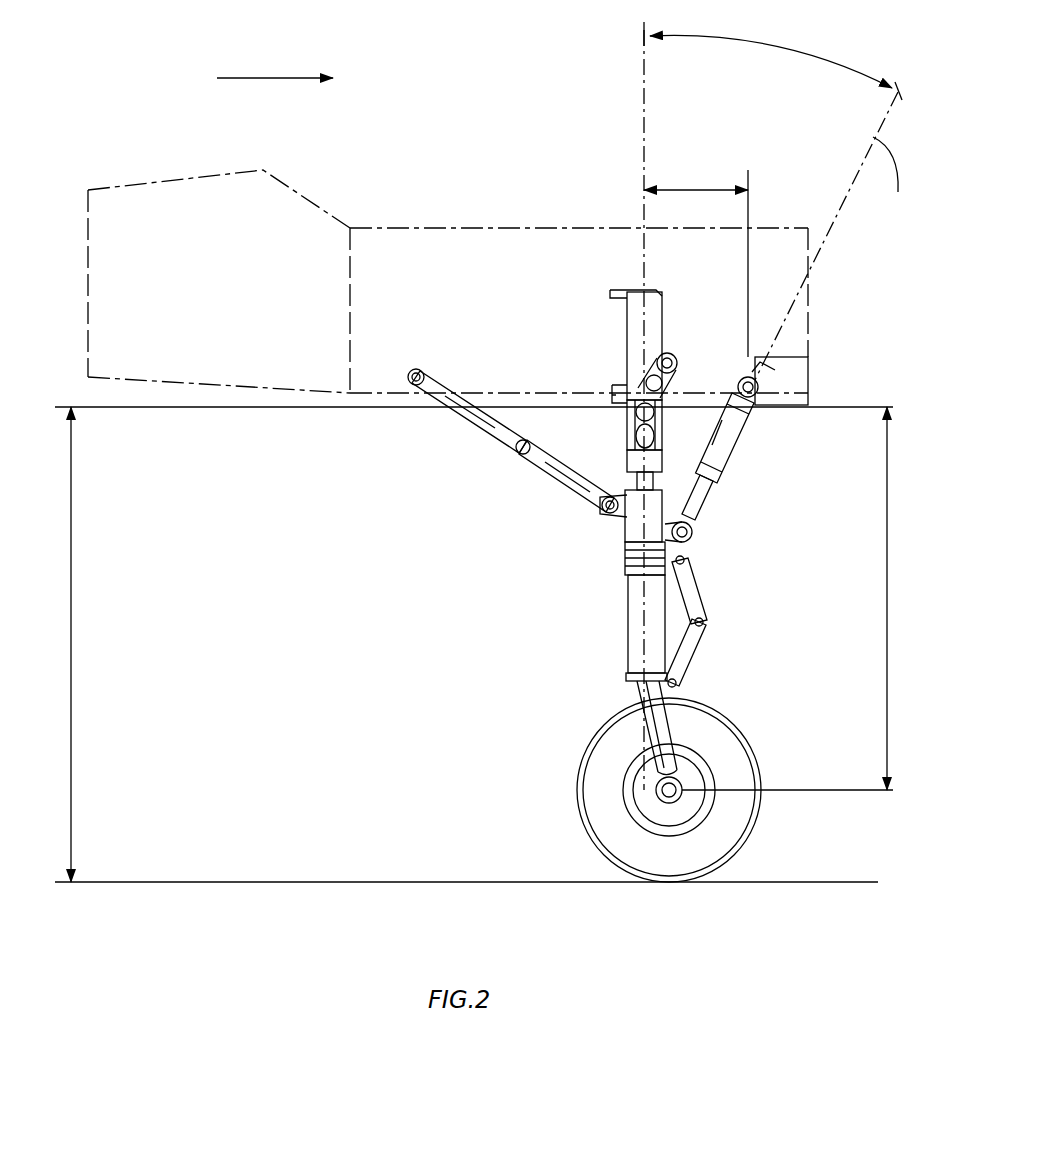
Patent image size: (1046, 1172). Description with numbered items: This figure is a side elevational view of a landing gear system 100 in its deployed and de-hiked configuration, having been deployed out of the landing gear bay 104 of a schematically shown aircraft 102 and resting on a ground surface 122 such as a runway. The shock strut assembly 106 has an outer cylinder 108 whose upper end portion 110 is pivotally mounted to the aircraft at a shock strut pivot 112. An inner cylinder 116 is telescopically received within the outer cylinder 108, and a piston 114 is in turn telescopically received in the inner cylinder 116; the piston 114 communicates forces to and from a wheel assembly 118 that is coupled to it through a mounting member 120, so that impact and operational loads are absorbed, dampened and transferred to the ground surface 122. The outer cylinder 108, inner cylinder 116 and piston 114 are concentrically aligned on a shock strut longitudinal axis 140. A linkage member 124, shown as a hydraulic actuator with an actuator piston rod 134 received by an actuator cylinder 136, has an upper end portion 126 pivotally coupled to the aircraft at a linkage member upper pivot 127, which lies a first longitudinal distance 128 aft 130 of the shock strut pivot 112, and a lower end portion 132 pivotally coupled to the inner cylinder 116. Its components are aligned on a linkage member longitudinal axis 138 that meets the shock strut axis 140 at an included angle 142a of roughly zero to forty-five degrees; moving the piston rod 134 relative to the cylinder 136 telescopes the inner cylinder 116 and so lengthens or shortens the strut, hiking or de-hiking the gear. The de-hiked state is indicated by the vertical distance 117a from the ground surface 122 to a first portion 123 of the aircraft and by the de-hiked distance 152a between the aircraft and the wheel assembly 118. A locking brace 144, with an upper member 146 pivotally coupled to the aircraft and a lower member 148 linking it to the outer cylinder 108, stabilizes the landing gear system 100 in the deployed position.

The landing gear system 100 is at (397, 532).
The aircraft 102 is at (488, 228).
The landing gear bay 104 is at (222, 298).
The shock strut assembly 106 is at (595, 553).
The outer cylinder 108 is at (625, 437).
The upper end portion 110 is at (667, 380).
The shock strut pivot 112 is at (675, 353).
The piston 114 is at (642, 638).
The inner cylinder 116 is at (627, 570).
The vertical distance 117a is at (78, 644).
The wheel assembly 118 is at (747, 706).
The mounting member 120 is at (642, 687).
The ground surface 122 is at (330, 878).
The first portion of the aircraft 123 is at (810, 405).
The linkage member 124 is at (748, 472).
The upper end portion 126 is at (745, 378).
The linkage member upper pivot 127 is at (770, 386).
The first longitudinal distance 128 is at (696, 178).
The aft 130 is at (272, 78).
The lower end portion 132 is at (685, 545).
The actuator piston rod 134 is at (692, 530).
The actuator cylinder 136 is at (743, 437).
The linkage member longitudinal axis 138 is at (836, 236).
The shock strut longitudinal axis 140 is at (644, 72).
The included angle 142a is at (776, 67).
The brace 144 is at (508, 477).
The upper member 146 is at (462, 417).
The lower member 148 is at (568, 488).
The de-hiked distance 152a is at (802, 598).